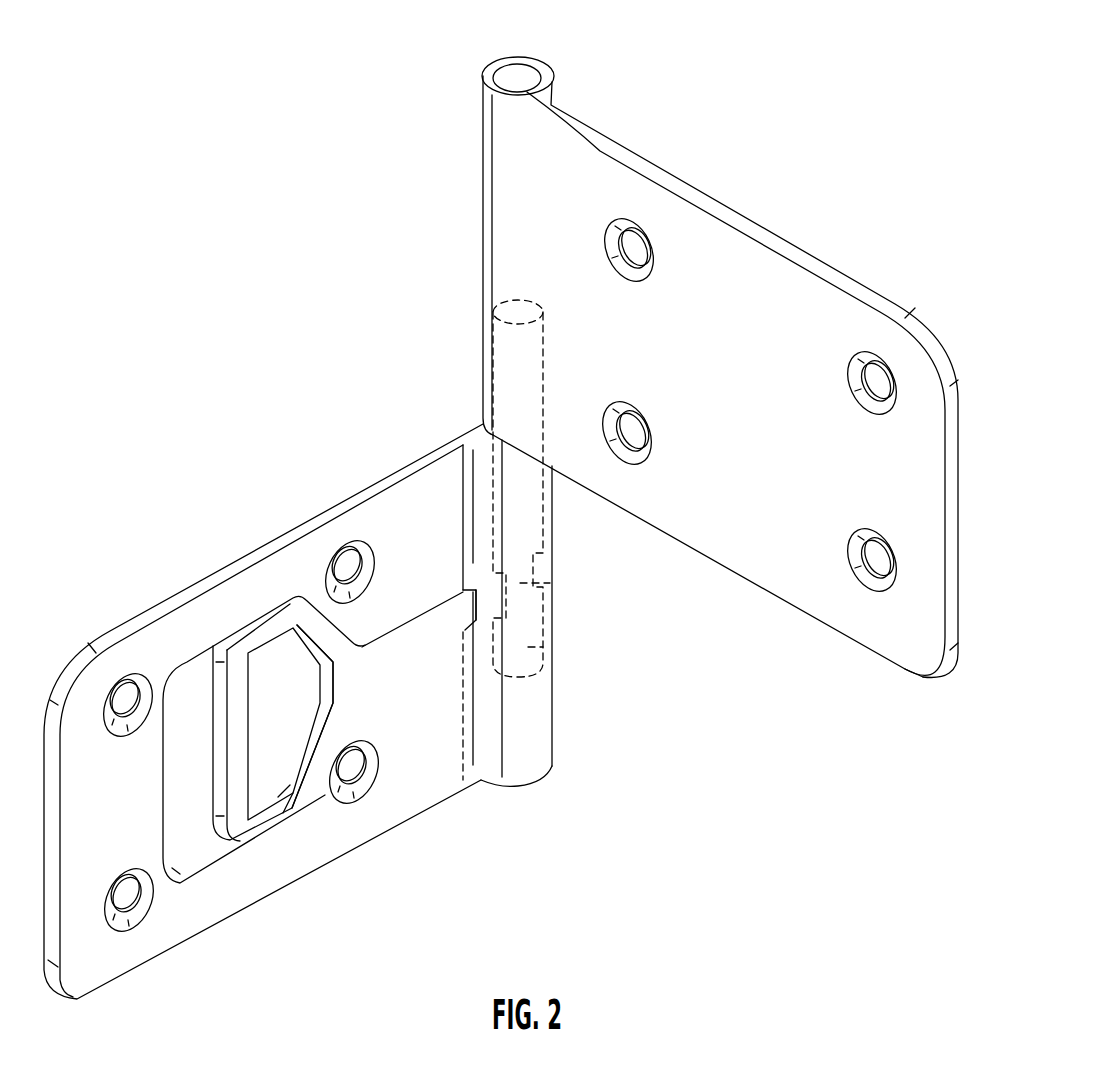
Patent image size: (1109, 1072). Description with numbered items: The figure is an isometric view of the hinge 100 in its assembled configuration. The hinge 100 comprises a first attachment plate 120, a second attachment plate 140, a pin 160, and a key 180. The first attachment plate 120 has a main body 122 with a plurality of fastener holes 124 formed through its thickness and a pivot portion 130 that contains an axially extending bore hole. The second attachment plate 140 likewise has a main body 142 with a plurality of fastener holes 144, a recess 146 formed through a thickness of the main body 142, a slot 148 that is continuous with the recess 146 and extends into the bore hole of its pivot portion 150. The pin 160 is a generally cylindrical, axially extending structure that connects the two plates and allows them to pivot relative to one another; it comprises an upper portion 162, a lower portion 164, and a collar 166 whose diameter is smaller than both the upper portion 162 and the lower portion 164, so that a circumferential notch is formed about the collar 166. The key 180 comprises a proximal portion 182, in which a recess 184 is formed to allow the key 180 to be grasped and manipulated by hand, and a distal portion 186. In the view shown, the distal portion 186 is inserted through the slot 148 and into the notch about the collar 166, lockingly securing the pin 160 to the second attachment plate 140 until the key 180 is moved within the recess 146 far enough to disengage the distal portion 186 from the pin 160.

The hinge 100 is at (884, 137).
The first attachment plate 120 is at (776, 604).
The main body 122 is at (764, 416).
The fastener holes 124 is at (648, 247).
The pivot portion 130 is at (558, 86).
The second attachment plate 140 is at (191, 576).
The main body 142 is at (444, 734).
The fastener holes 144 is at (305, 558).
The recess 146 is at (210, 866).
The slot 148 is at (458, 608).
The pivot portion 150 is at (523, 748).
The pin 160 is at (484, 468).
The upper portion 162 is at (532, 512).
The lower portion 164 is at (528, 647).
The collar 166 is at (520, 583).
The key 180 is at (195, 722).
The proximal portion 182 is at (285, 812).
The recess 184 is at (300, 762).
The distal portion 186 is at (482, 592).